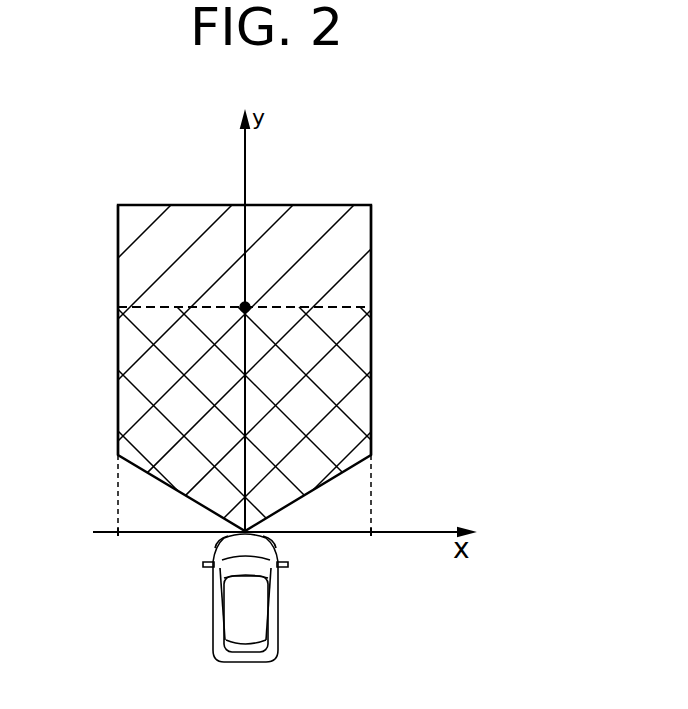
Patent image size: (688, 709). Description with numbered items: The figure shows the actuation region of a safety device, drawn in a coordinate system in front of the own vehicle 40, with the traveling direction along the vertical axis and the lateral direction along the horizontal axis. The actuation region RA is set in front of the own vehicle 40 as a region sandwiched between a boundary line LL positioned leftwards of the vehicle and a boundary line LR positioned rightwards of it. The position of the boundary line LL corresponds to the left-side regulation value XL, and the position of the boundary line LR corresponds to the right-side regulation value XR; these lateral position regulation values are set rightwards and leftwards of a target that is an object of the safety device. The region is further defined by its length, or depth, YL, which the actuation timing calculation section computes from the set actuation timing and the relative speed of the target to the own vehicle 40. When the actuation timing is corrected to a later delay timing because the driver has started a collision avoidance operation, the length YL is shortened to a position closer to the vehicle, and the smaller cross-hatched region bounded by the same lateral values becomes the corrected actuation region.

The own vehicle 40 is at (279, 622).
The actuation region RA is at (358, 287).
The boundary line LL is at (118, 349).
The boundary line LR is at (371, 352).
The length of actuation region YL is at (228, 190).
The left-side regulation value XL is at (119, 546).
The right-side regulation value XR is at (371, 546).